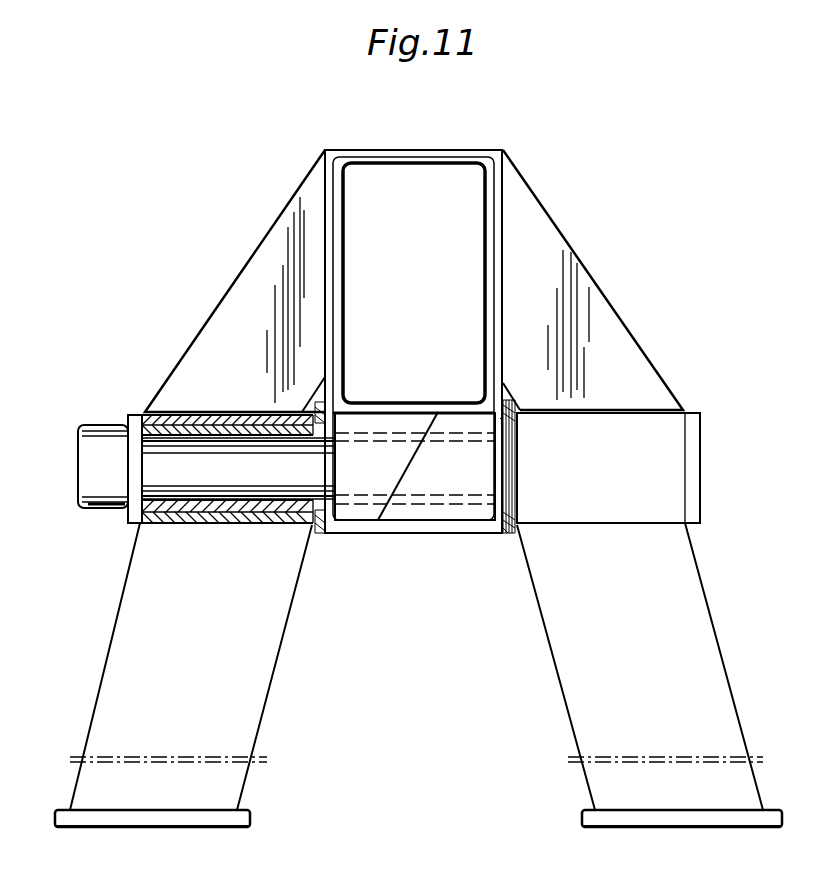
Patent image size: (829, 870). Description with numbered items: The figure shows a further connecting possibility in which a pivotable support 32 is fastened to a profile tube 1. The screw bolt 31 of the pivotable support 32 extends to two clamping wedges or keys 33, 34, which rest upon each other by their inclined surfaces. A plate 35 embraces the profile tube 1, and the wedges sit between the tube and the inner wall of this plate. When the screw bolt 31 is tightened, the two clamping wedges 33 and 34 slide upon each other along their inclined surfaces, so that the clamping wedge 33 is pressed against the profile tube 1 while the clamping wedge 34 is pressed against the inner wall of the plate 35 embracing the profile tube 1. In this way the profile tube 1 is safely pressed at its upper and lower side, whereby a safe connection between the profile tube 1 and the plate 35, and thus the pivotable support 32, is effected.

The profile tube 1 is at (343, 303).
The screw bolt 31 is at (95, 487).
The pivotable support 32 is at (648, 212).
The clamping wedge 33 is at (365, 508).
The clamping wedge 34 is at (473, 512).
The plate 35 is at (425, 150).